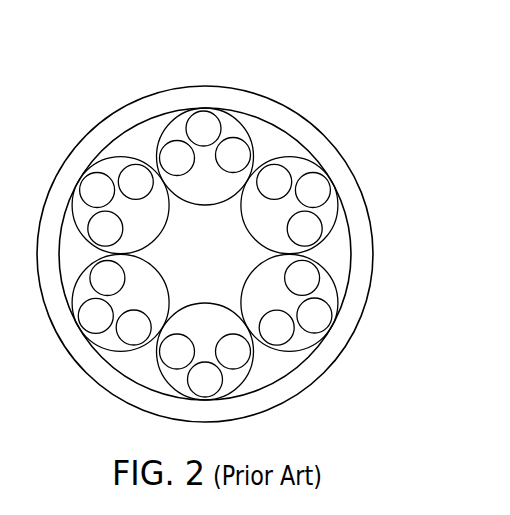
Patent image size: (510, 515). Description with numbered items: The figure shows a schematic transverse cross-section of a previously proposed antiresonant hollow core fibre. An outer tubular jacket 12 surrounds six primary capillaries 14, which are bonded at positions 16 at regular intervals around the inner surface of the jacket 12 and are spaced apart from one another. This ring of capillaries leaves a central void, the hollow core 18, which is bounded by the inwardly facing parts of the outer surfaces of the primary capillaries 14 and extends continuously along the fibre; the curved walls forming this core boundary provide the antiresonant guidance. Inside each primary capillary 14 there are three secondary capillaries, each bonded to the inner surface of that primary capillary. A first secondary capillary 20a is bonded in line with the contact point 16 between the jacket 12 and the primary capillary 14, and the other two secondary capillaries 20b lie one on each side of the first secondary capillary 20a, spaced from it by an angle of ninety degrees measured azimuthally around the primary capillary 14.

The outer tubular jacket 12 is at (323, 367).
The primary capillary 14 is at (295, 155).
The bonding position 16 is at (336, 184).
The hollow core 18 is at (222, 267).
The first secondary capillary 20a is at (234, 110).
The secondary capillary 20b is at (171, 139).